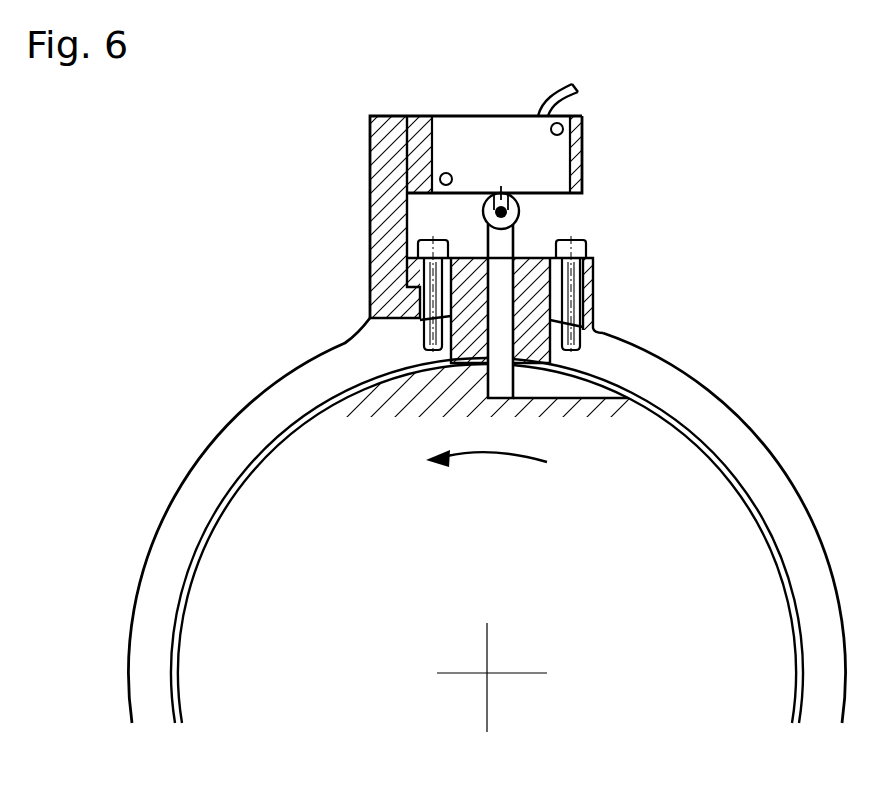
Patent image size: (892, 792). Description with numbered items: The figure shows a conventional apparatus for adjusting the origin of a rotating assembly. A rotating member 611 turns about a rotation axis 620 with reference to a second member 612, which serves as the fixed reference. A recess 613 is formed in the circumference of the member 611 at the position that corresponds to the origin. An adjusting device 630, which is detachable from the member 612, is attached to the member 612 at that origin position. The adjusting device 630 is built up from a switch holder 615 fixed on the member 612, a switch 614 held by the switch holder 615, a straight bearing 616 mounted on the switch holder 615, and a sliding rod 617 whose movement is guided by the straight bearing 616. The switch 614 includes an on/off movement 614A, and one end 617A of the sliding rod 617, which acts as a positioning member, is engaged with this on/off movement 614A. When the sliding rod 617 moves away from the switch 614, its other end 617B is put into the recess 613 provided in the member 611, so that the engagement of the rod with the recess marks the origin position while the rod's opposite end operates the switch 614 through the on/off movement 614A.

The member 611 is at (310, 500).
The member 612 is at (182, 483).
The recess 613 is at (563, 397).
The switch 614 is at (443, 143).
The on/off movement 614A is at (440, 177).
The switch holder 615 is at (370, 181).
The straight bearing 616 is at (596, 274).
The sliding rod 617 is at (500, 234).
The end of sliding rod 617A is at (521, 208).
The other end of sliding rod 617B is at (505, 358).
The rotation axis 620 is at (485, 671).
The adjusting device 630 is at (583, 142).